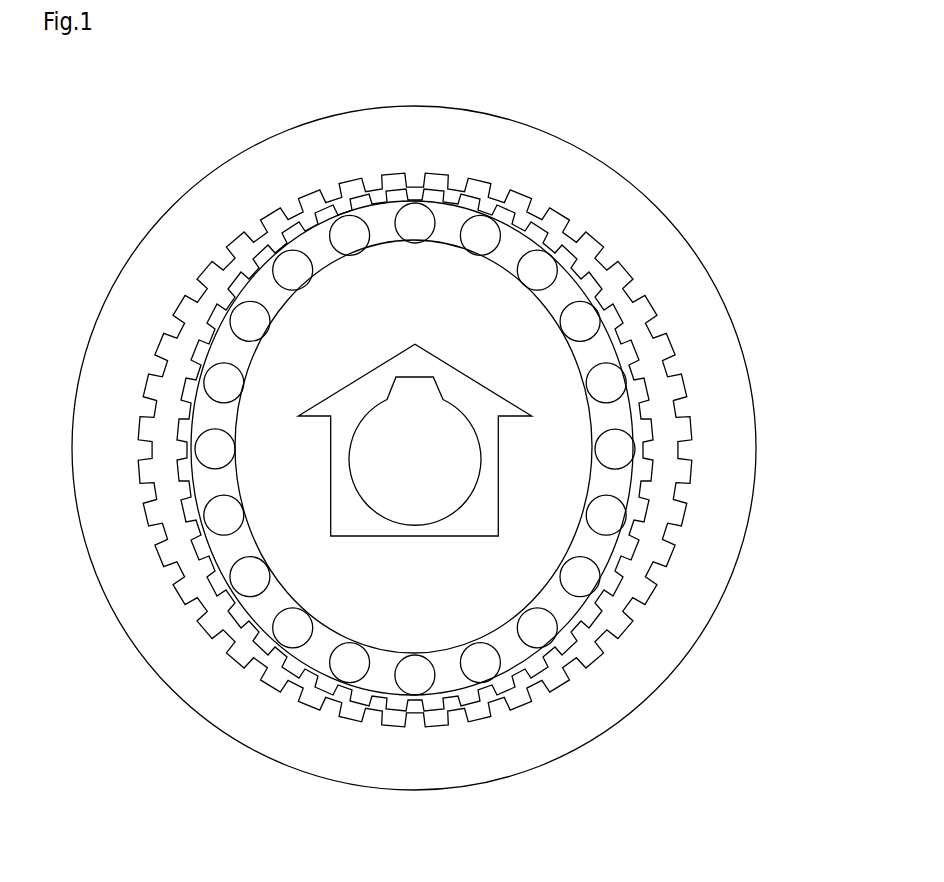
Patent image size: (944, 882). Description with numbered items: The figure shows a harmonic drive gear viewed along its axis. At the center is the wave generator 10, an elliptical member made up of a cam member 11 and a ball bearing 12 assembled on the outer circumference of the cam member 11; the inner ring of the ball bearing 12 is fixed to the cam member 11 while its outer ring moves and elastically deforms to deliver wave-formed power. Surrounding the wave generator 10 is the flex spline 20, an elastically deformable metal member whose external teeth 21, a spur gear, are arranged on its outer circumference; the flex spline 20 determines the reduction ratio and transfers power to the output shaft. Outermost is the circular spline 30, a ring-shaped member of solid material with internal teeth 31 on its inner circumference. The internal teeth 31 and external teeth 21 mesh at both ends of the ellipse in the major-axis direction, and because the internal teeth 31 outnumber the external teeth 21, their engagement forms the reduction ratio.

The wave generator 10 is at (536, 448).
The cam member 11 is at (543, 517).
The ball bearing 12 is at (617, 447).
The flex spline 20 is at (475, 432).
The external teeth 21 is at (647, 382).
The circular spline 30 is at (535, 182).
The internal teeth 31 is at (571, 233).